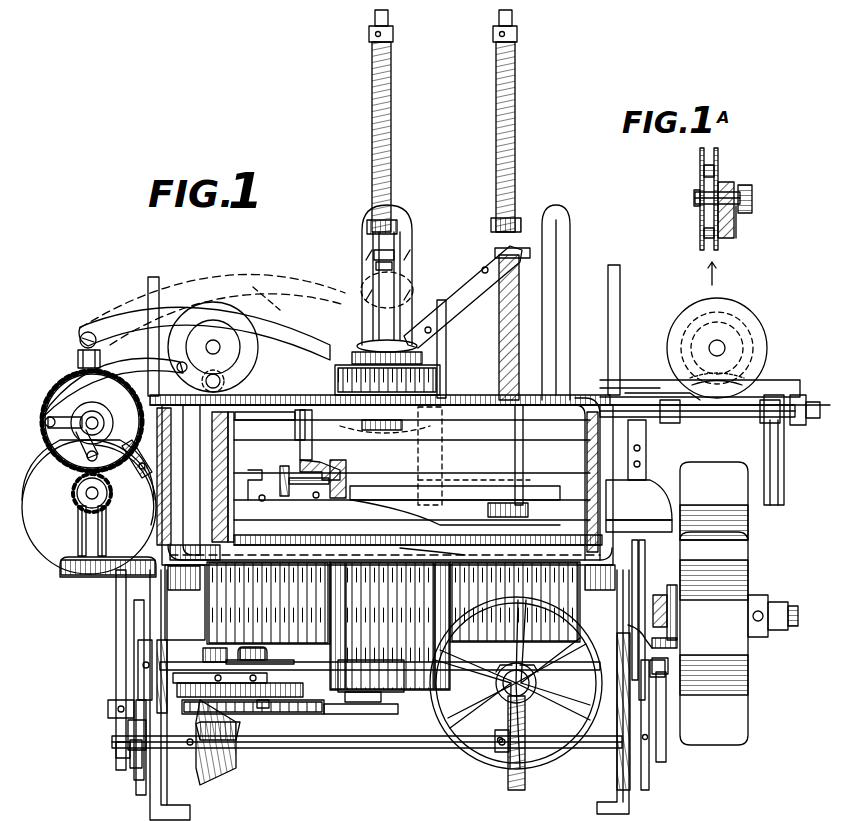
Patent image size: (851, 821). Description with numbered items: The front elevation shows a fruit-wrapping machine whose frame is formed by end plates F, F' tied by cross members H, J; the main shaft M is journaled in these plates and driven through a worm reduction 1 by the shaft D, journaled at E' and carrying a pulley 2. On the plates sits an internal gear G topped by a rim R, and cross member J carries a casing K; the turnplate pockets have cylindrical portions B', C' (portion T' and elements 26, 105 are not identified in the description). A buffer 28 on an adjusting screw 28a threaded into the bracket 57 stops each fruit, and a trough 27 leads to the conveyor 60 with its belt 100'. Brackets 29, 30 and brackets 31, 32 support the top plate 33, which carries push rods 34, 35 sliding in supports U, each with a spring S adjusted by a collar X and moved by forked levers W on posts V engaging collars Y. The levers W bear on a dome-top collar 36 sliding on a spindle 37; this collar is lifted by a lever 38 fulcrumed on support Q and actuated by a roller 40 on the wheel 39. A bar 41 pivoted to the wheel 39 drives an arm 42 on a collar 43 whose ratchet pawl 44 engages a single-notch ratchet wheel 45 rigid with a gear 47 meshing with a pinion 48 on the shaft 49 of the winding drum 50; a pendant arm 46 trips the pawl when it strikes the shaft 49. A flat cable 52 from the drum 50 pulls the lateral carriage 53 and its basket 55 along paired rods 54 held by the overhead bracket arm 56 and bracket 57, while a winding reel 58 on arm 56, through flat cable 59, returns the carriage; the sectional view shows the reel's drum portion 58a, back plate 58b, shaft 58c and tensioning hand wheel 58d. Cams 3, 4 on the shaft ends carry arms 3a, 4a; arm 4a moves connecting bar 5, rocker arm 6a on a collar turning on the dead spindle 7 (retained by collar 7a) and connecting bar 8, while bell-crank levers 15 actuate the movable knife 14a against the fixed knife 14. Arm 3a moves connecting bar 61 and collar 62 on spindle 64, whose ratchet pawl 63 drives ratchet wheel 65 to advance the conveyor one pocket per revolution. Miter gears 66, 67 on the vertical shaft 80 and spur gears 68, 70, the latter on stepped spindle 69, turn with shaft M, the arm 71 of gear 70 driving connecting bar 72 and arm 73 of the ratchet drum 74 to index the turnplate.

In FIG. 1, the worm reduction 1 is at (528, 694).
In FIG. 1, the pulley 2 is at (432, 712).
In FIG. 1, the cam 3 is at (640, 786).
In FIG. 1, the arm 3a is at (652, 772).
In FIG. 1, the cam 4 is at (150, 780).
In FIG. 1, the arm 4a is at (134, 766).
In FIG. 1, the connecting bar 5 is at (116, 752).
In FIG. 1, the rocker arm 6a is at (128, 736).
In FIG. 1, the dead spindle 7 is at (104, 712).
In FIG. 1, the collar 7a is at (126, 700).
In FIG. 1, the connecting bar 8 is at (118, 646).
In FIG. 1, the knife 14 is at (318, 525).
In FIG. 1, the knife 14a is at (474, 456).
In FIG. 1, the lever 15 is at (134, 672).
In FIG. 1, the collar 26 is at (546, 516).
In FIG. 1, the trough 27 is at (455, 500).
In FIG. 1, the buffer 28 is at (346, 470).
In FIG. 1, the adjusting screw 28a is at (284, 468).
In FIG. 1, the bracket 29 is at (212, 496).
In FIG. 1, the bracket 30 is at (576, 436).
In FIG. 1, the bracket 31 is at (195, 568).
In FIG. 1, the bracket 32 is at (600, 496).
In FIG. 1, the top plate 33 is at (425, 395).
In FIG. 1, the push rod 34 is at (512, 122).
In FIG. 1, the push rod 35 is at (384, 124).
In FIG. 1, the dome-top collar 36 is at (366, 348).
In FIG. 1, the vertical spindle 37 is at (378, 268).
In FIG. 1, the lever 38 is at (252, 330).
In FIG. 1, the wheel 39 is at (256, 352).
In FIG. 1, the roller 40 is at (226, 382).
In FIG. 1, the bar 41 is at (155, 375).
In FIG. 1, the arm 42 is at (78, 430).
In FIG. 1, the collar 43 is at (104, 426).
In FIG. 1, the ratchet pawl 44 is at (70, 462).
In FIG. 1, the ratchet wheel 45 is at (98, 412).
In FIG. 1, the pendant arm 46 is at (142, 466).
In FIG. 1, the gear 47 is at (62, 392).
In FIG. 1, the pinion 48 is at (78, 504).
In FIG. 1, the shaft 49 is at (98, 496).
In FIG. 1, the winding drum 50 is at (56, 540).
In FIG. 1, the flat cable 52 is at (250, 420).
In FIG. 1, the lateral carriage 53 is at (404, 438).
In FIG. 1, the paired rods 54 is at (640, 436).
In FIG. 1, the basket 55 is at (786, 478).
In FIG. 1, the overhead bracket arm 56 is at (662, 380).
In FIG. 1A, the overhead bracket arm 56 is at (736, 222).
In FIG. 1, the bracket 57 is at (305, 432).
In FIG. 1, the winding reel 58 is at (755, 320).
In FIG. 1A, the drum portion 58a is at (700, 178).
In FIG. 1A, the back plate 58b is at (722, 184).
In FIG. 1A, the shaft 58c is at (694, 200).
In FIG. 1A, the hand wheel 58d is at (752, 200).
In FIG. 1, the flat cable 59 is at (680, 400).
In FIG. 1, the conveyor 60 is at (748, 598).
In FIG. 1, the connecting bar 61 is at (668, 740).
In FIG. 1, the collar 62 is at (646, 600).
In FIG. 1, the ratchet pawl 63 is at (678, 642).
In FIG. 1, the spindle 64 is at (796, 622).
In FIG. 1, the ratchet wheel 65 is at (672, 614).
In FIG. 1, the miter gear 66 is at (214, 770).
In FIG. 1, the miter gear 67 is at (245, 728).
In FIG. 1, the spur gear 68 is at (172, 705).
In FIG. 1, the stepped spindle 69 is at (270, 648).
In FIG. 1, the spur gear 70 is at (292, 696).
In FIG. 1, the arm 71 is at (280, 714).
In FIG. 1, the connecting bar 72 is at (338, 716).
In FIG. 1, the arm 73 is at (368, 714).
In FIG. 1, the ratchet drum 74 is at (371, 681).
In FIG. 1, the vertical shaft 80 is at (214, 443).
In FIG. 1, the belt 100' is at (778, 654).
In FIG. 1, the roller 105 is at (748, 522).
In FIG. 1, the cylindrical portion B' is at (268, 603).
In FIG. 1, the cylindrical portion C' is at (515, 602).
In FIG. 1, the shaft D is at (500, 686).
In FIG. 1, the journal E' is at (539, 682).
In FIG. 1, the end plate F is at (175, 695).
In FIG. 1, the end plate F' is at (606, 692).
In FIG. 1, the internal gear G is at (465, 562).
In FIG. 1, the cross member H is at (196, 590).
In FIG. 1, the cross member J is at (620, 650).
In FIG. 1, the casing K is at (390, 626).
In FIG. 1, the main shaft M is at (415, 750).
In FIG. 1, the support Q is at (76, 362).
In FIG. 1, the circumferential rib R is at (285, 548).
In FIG. 1, the spring S is at (498, 119).
In FIG. 1, the cylinder T' is at (379, 573).
In FIG. 1, the support U is at (490, 224).
In FIG. 1, the post V is at (445, 340).
In FIG. 1, the lever W is at (395, 262).
In FIG. 1, the collar X is at (494, 33).
In FIG. 1, the collar Y is at (364, 240).